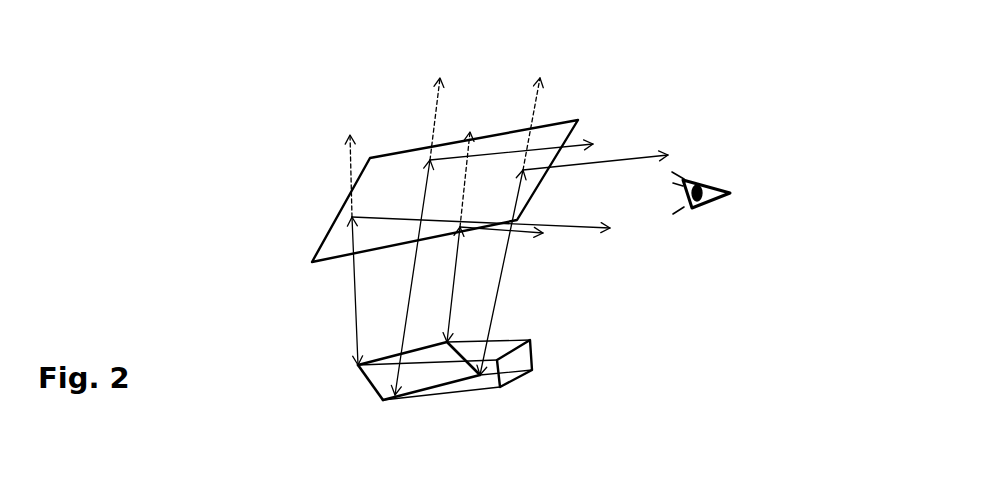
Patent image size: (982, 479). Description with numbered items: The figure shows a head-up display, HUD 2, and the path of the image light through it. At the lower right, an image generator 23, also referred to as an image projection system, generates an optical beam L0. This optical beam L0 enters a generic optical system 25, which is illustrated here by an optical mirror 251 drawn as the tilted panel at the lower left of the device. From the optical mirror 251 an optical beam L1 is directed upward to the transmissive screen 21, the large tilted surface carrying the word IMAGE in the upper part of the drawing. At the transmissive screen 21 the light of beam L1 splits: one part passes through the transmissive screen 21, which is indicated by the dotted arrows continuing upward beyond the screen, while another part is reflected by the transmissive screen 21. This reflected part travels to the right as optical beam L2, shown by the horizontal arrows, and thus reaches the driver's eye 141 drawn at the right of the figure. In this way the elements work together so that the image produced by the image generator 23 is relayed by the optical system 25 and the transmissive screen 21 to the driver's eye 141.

The HUD 2 is at (257, 255).
The transmissive screen 21 is at (563, 120).
The image generator 23 is at (537, 373).
The optical system 25 is at (372, 393).
The optical mirror 251 is at (367, 378).
The driver's eye 141 is at (733, 175).
The optical beam L0 is at (460, 392).
The optical beam L1 is at (347, 302).
The optical beam L2 is at (636, 146).